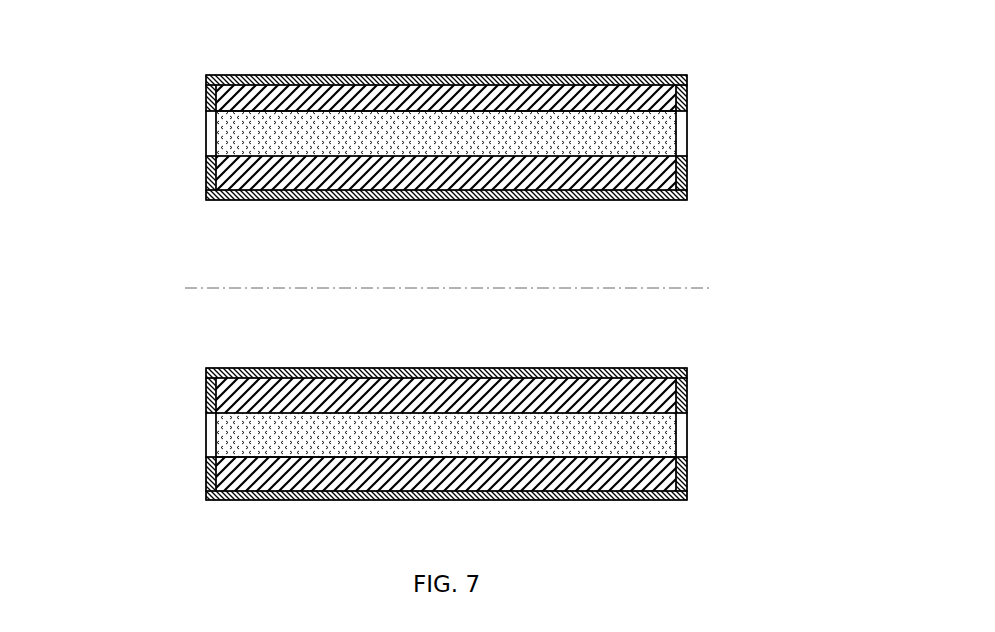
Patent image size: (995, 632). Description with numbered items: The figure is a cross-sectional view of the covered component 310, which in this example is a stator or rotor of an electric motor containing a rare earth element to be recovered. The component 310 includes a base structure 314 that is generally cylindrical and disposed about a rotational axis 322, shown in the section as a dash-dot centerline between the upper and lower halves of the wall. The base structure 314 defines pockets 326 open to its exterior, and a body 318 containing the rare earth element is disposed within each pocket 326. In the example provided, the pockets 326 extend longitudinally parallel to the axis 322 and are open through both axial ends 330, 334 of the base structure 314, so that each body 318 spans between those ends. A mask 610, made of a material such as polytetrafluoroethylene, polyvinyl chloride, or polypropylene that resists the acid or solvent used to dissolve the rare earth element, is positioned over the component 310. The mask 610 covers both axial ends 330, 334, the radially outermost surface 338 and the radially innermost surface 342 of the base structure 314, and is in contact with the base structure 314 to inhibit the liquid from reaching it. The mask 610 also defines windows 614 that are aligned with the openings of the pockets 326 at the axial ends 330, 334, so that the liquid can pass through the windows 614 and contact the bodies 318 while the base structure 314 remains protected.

The mask 610 is at (257, 75).
The radially outermost surface 338 is at (533, 83).
The axial end 334 is at (216, 98).
The body 318 is at (357, 130).
The window 614 is at (213, 152).
The pocket 326 is at (433, 113).
The axial end 330 is at (687, 178).
The rotational axis 322 is at (204, 287).
The component 310 is at (630, 372).
The radially innermost surface 342 is at (257, 368).
The base structure 314 is at (545, 480).